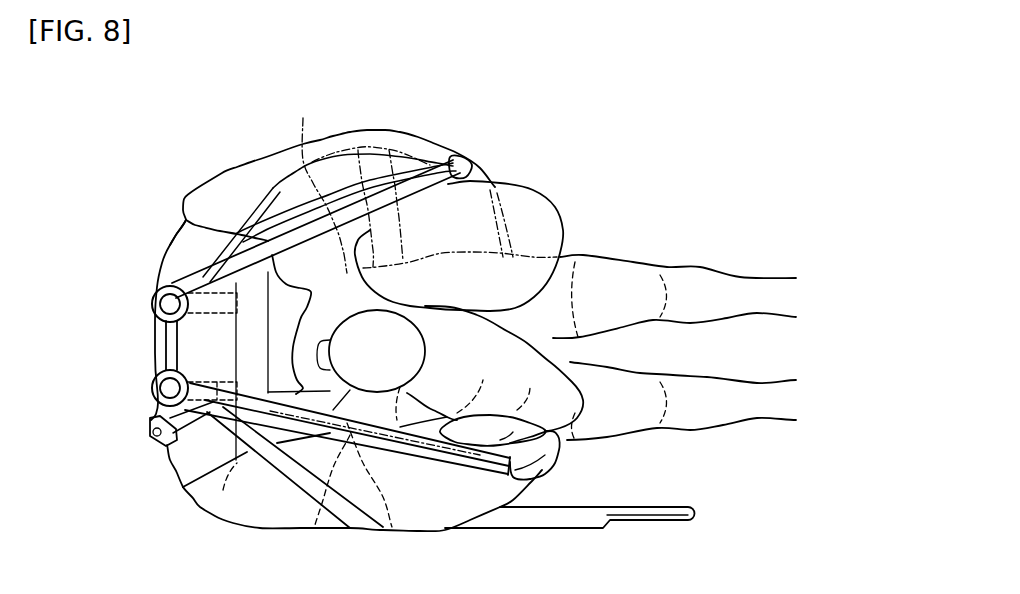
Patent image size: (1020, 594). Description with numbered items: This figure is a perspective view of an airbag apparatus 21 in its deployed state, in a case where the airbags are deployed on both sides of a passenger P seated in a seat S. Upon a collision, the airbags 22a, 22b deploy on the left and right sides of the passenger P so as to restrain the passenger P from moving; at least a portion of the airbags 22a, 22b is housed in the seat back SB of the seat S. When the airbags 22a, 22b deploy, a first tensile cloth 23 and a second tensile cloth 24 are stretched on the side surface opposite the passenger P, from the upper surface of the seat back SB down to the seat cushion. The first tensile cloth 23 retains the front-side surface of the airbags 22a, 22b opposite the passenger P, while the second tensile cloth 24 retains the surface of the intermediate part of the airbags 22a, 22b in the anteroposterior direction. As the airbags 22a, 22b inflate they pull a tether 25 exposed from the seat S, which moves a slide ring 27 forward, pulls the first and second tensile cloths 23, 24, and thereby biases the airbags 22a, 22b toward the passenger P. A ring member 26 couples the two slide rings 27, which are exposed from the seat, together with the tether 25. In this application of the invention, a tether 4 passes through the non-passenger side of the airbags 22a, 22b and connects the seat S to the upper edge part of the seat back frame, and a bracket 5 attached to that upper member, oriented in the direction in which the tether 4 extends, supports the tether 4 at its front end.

The tether 4 is at (392, 552).
The bracket 5 is at (175, 280).
The airbag apparatus 21 is at (134, 432).
The airbag 22a is at (420, 150).
The airbag 22b is at (440, 507).
The first tensile cloth 23 is at (395, 150).
The second tensile cloth 24 is at (250, 225).
The tether 25 is at (203, 275).
The ring member 26 is at (165, 343).
The slide ring 27 is at (152, 297).
The seat S is at (168, 220).
The seat back SB is at (178, 250).
The passenger P is at (612, 268).